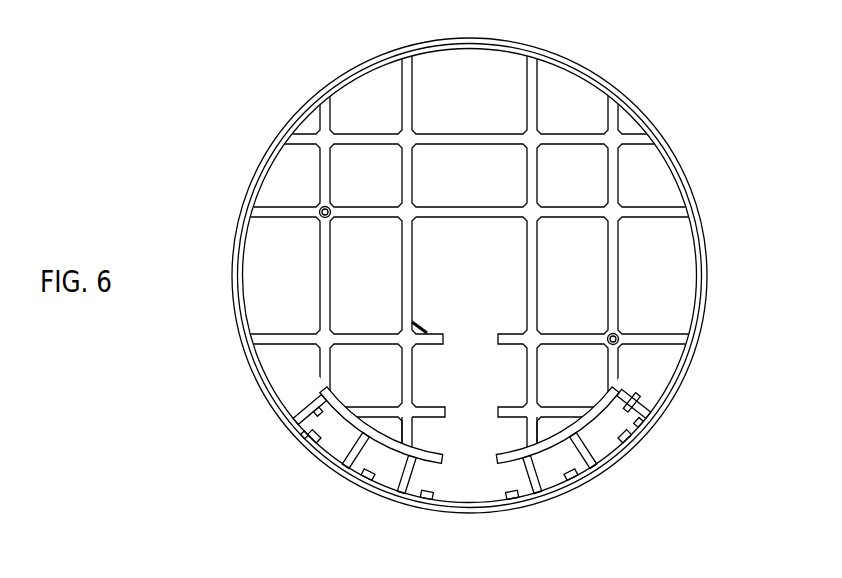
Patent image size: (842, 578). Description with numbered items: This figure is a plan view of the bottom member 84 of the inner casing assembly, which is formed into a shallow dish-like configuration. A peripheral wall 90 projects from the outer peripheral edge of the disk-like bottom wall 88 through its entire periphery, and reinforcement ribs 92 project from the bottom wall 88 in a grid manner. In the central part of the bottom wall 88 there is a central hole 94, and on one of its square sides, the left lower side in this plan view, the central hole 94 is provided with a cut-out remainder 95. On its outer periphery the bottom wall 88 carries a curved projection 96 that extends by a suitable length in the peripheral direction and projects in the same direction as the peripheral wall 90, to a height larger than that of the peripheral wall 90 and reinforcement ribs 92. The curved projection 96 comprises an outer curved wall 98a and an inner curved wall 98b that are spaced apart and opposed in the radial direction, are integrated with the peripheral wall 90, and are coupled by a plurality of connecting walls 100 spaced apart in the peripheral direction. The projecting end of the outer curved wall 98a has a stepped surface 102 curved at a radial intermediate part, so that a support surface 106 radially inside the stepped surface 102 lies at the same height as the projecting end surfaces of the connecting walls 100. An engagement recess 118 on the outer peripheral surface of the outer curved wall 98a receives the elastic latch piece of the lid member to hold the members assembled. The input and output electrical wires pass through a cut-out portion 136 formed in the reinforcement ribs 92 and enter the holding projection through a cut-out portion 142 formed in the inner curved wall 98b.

The bottom member 84 is at (652, 113).
The bottom wall 88 is at (680, 286).
The peripheral wall 90 is at (280, 388).
The reinforcement ribs 92 is at (271, 338).
The central hole 94 is at (530, 284).
The cut-out remainder 95 is at (411, 323).
The curved projection 96 is at (298, 448).
The outer curved wall 98a is at (659, 421).
The inner curved wall 98b is at (623, 389).
The connecting walls 100 is at (318, 427).
The stepped surface 102 is at (580, 486).
The support surface 106 is at (470, 514).
The engagement recess 118 is at (410, 506).
The cut-out portion 136 is at (445, 336).
The cut-out portion 142 is at (492, 462).